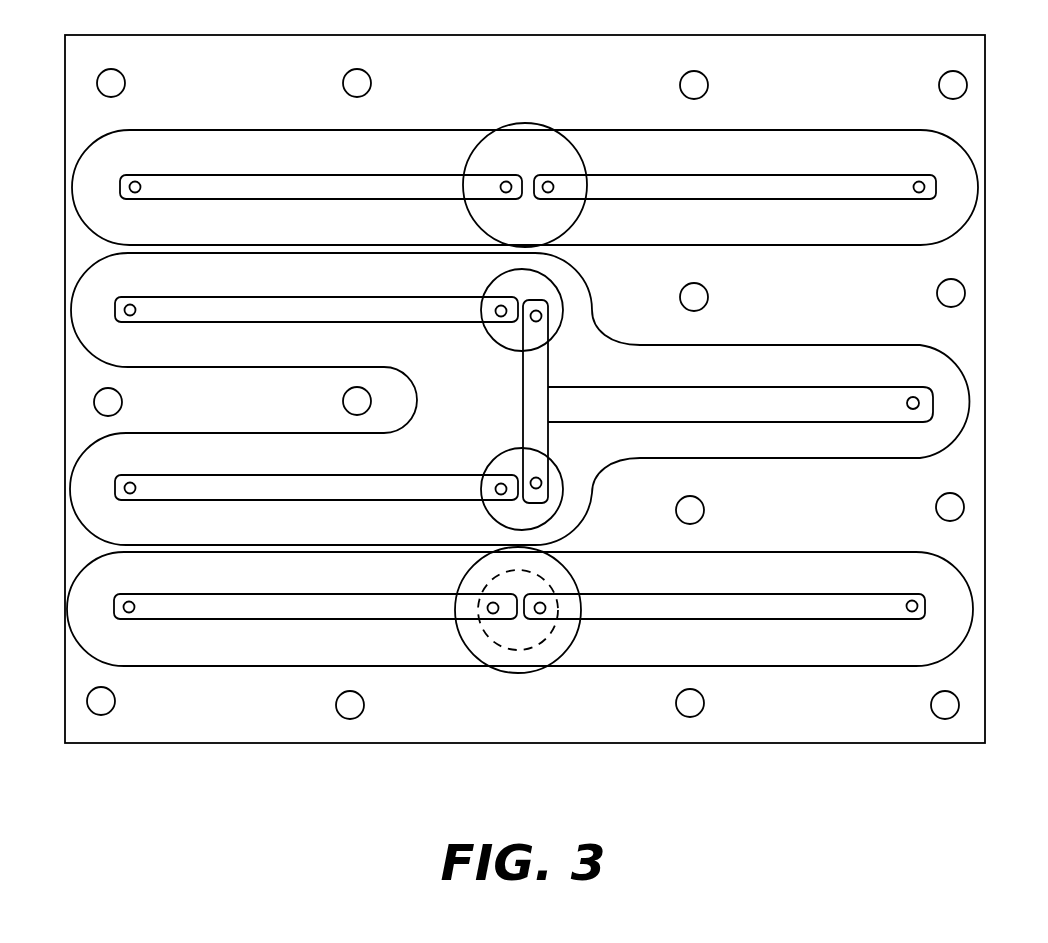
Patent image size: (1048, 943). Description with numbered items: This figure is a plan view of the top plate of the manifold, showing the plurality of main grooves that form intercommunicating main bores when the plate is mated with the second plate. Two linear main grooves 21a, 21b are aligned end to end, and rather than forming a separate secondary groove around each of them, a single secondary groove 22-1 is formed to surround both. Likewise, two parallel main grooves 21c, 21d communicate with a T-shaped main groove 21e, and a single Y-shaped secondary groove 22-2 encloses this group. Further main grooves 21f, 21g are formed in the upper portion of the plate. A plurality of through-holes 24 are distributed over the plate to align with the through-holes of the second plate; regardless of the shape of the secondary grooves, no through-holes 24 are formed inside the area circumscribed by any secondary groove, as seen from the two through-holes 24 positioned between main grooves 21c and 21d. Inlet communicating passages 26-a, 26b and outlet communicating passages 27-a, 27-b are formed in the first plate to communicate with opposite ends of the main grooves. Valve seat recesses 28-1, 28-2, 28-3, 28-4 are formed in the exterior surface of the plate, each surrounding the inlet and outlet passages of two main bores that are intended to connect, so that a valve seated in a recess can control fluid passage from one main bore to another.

The main groove 21a is at (278, 592).
The main groove 21b is at (798, 608).
The main groove 21c is at (280, 483).
The main groove 21d is at (268, 297).
The T-shaped main groove 21e is at (587, 390).
The main groove 21f is at (267, 173).
The main groove 21g is at (707, 187).
The secondary groove 22-1 is at (230, 666).
The Y-shaped secondary groove 22-2 is at (268, 366).
The through-holes 24 is at (968, 72).
The inlet communicating passage 26-a is at (490, 613).
The inlet communicating passage 26b is at (918, 607).
The outlet communicating passage 27-a is at (130, 613).
The outlet communicating passage 27-b is at (543, 612).
The valve seat recess 28-1 is at (523, 673).
The valve seat recess 28-2 is at (557, 480).
The valve seat recess 28-3 is at (550, 335).
The valve seat recess 28-4 is at (523, 122).